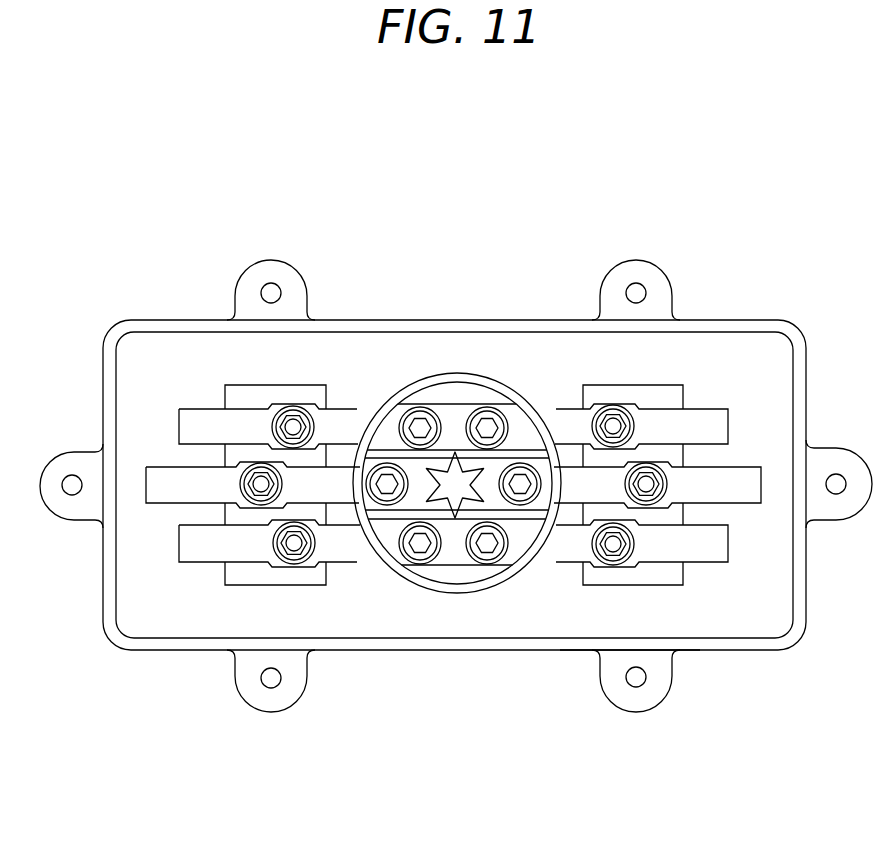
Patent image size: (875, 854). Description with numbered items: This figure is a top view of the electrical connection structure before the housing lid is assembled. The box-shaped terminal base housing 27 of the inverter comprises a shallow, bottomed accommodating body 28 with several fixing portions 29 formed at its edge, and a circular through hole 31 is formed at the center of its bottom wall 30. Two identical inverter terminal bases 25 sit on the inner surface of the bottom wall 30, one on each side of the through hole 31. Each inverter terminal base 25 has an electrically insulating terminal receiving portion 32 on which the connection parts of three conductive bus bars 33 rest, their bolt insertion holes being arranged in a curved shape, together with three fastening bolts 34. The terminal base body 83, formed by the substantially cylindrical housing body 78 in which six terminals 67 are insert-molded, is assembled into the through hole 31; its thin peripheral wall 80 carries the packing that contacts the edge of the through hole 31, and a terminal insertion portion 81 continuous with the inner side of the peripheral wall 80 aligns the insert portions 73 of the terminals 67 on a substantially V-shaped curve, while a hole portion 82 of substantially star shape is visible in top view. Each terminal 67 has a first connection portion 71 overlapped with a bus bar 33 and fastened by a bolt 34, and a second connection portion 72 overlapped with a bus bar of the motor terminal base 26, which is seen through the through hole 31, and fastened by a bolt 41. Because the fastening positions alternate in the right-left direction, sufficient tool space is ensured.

The inverter terminal base 25 is at (213, 378).
The motor terminal base 26 is at (453, 550).
The terminal base housing 27 is at (732, 752).
The accommodating body 28 is at (713, 643).
The fixing portion 29 is at (650, 682).
The bottom wall 30 is at (767, 578).
The through hole 31 is at (490, 576).
The terminal receiving portion 32 is at (670, 577).
The bus bar 33 is at (717, 548).
The fastening bolt 34 is at (613, 549).
The fastening bolt 41 is at (419, 424).
The terminal 67 is at (340, 413).
The first connection portion 71 is at (568, 558).
The second connection portion 72 is at (390, 407).
The insert portion 73 is at (434, 405).
The housing body 78 is at (400, 575).
The peripheral wall 80 is at (423, 578).
The terminal insertion portion 81 is at (446, 410).
The hole portion 82 is at (462, 456).
The terminal base body 83 is at (363, 545).